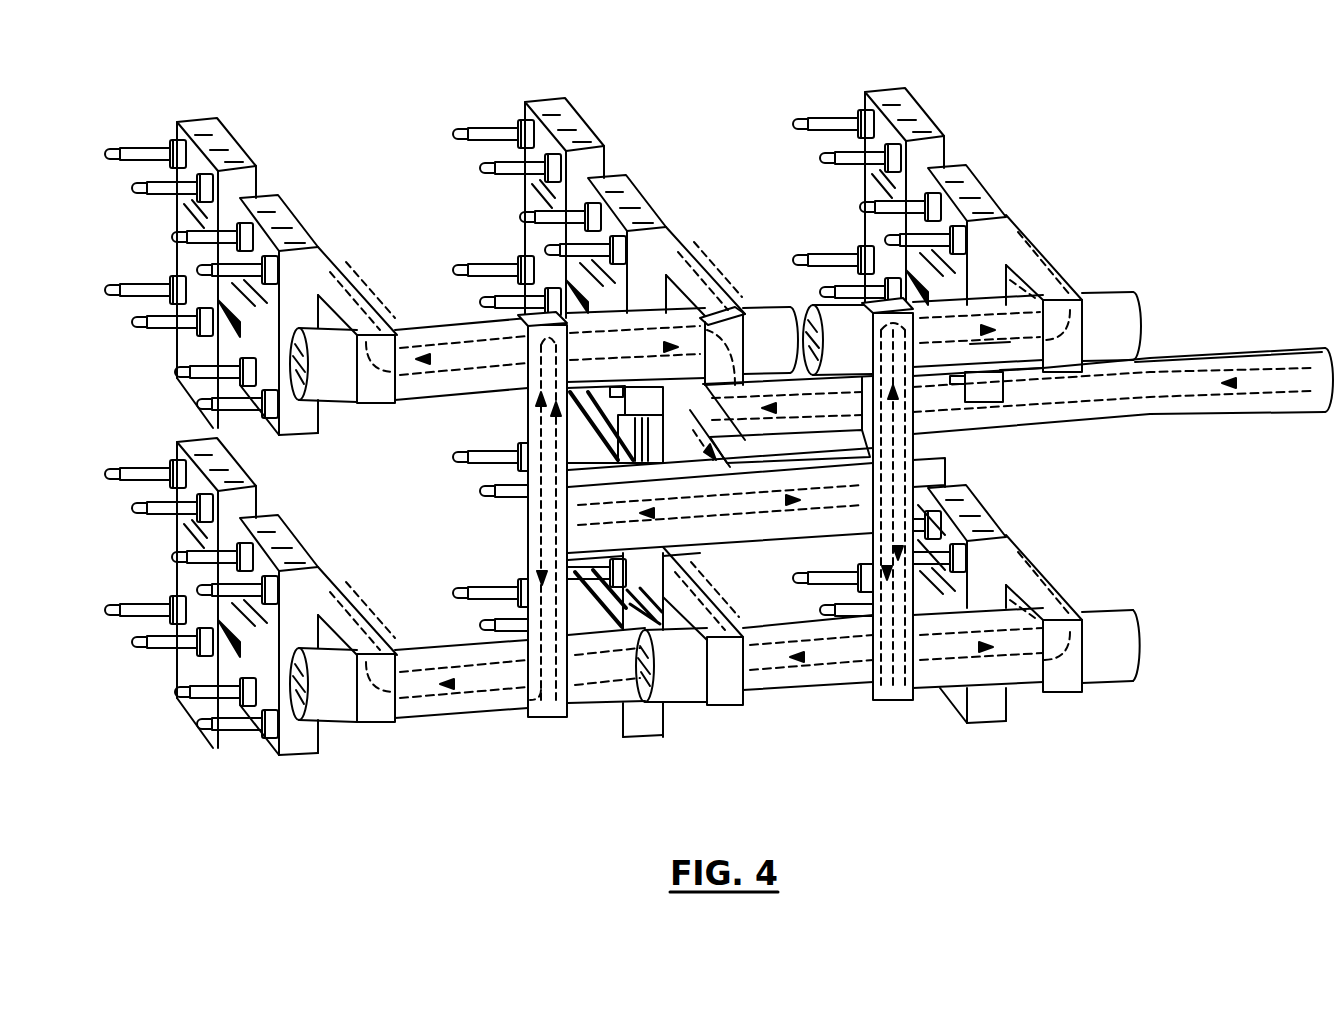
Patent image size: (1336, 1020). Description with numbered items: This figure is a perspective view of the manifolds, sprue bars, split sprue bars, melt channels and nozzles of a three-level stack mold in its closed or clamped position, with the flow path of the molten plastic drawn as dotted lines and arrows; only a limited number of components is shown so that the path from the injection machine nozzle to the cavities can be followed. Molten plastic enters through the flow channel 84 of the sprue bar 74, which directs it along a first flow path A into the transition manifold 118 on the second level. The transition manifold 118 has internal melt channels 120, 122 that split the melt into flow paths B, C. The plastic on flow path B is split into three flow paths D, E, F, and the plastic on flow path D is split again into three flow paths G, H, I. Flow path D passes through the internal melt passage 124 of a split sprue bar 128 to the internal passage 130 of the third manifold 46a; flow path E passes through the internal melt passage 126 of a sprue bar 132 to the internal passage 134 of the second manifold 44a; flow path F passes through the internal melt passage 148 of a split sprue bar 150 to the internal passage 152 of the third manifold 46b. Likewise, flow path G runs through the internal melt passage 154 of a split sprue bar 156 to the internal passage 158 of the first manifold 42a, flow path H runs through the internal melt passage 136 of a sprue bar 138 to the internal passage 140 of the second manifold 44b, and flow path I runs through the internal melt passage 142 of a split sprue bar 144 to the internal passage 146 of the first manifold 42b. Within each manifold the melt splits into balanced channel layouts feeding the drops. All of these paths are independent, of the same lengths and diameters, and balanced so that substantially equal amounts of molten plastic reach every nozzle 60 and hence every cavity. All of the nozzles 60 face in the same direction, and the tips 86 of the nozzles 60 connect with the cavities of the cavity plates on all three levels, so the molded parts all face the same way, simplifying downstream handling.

The nozzle 60 is at (147, 142).
The tip 86 is at (112, 152).
The third manifold 46a is at (337, 285).
The third manifold 46b is at (367, 722).
The internal passage 130 is at (340, 293).
The internal melt passage 124 is at (433, 347).
The split sprue bar 128 is at (413, 388).
The internal melt passage 126 is at (638, 345).
The second manifold 44a is at (697, 352).
The sprue bar 132 is at (682, 335).
The transition manifold 118 is at (700, 395).
The internal passage 134 is at (705, 316).
The first manifold 42a is at (1043, 243).
The internal passage 158 is at (1080, 290).
The sprue bar 74 is at (1240, 352).
The flow channel 84 is at (1158, 393).
The internal passage 152 is at (333, 613).
The internal melt channel 120 is at (613, 518).
The internal melt channel 122 is at (733, 507).
The internal passage 146 is at (1023, 577).
The split sprue bar 156 is at (995, 357).
The internal melt passage 154 is at (1020, 330).
The split sprue bar 150 is at (500, 703).
The internal melt passage 148 is at (423, 690).
The internal passage 140 is at (723, 547).
The second manifold 44b is at (730, 713).
The internal melt passage 136 is at (830, 657).
The sprue bar 138 is at (827, 657).
The internal melt passage 142 is at (1010, 647).
The split sprue bar 144 is at (1015, 687).
The first manifold 42b is at (1070, 693).
The first flow path A is at (1267, 387).
The flow path B is at (667, 557).
The flow path C is at (683, 547).
The flow path D is at (457, 362).
The flow path E is at (640, 345).
The flow path F is at (470, 683).
The flow path G is at (897, 413).
The flow path H is at (835, 657).
The flow path I is at (920, 687).